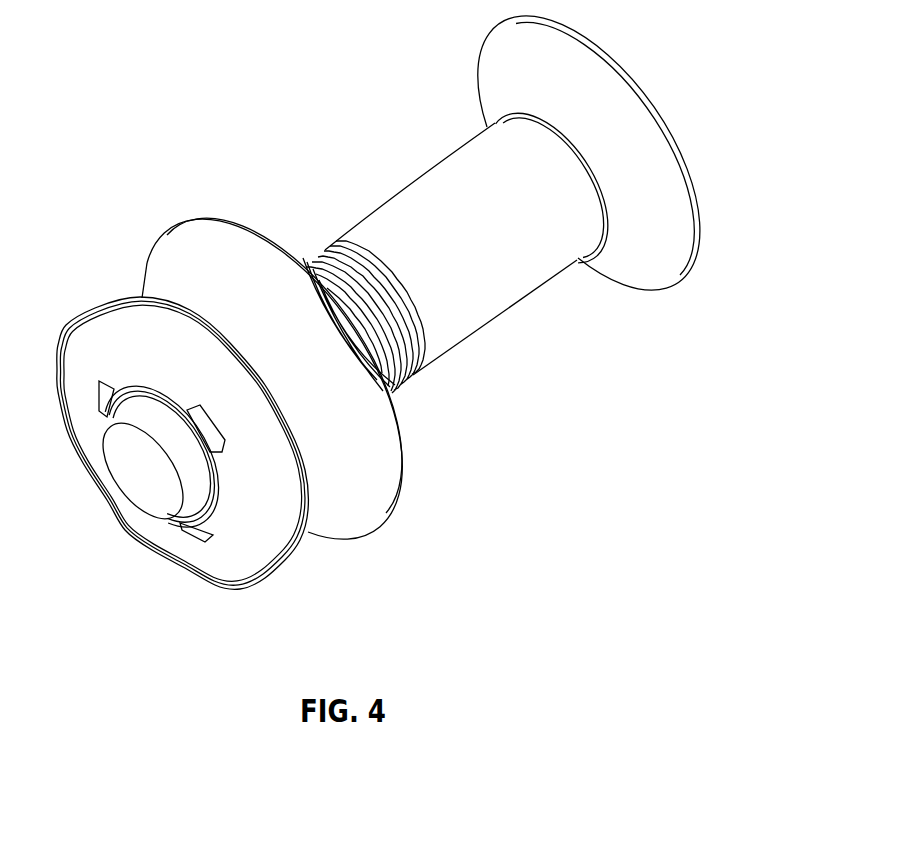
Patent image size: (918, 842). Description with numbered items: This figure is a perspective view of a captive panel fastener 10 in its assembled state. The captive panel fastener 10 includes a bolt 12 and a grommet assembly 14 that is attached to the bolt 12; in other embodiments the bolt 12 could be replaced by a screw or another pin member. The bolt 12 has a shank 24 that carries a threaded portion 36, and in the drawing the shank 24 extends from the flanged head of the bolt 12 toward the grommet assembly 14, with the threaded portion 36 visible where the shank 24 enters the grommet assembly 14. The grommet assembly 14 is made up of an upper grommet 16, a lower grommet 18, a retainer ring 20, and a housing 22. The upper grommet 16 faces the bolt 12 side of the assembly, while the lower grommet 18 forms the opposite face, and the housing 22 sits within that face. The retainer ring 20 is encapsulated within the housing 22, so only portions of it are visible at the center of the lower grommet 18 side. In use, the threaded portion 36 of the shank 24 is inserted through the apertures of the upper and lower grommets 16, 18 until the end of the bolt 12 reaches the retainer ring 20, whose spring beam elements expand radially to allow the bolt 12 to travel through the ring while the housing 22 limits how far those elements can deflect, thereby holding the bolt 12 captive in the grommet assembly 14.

The captive panel fastener 10 is at (202, 90).
The bolt 12 is at (455, 175).
The grommet assembly 14 is at (226, 430).
The upper grommet 16 is at (163, 260).
The lower grommet 18 is at (128, 307).
The retainer ring 20 is at (207, 430).
The housing 22 is at (203, 567).
The shank 24 is at (482, 292).
The threaded portion 36 is at (415, 367).